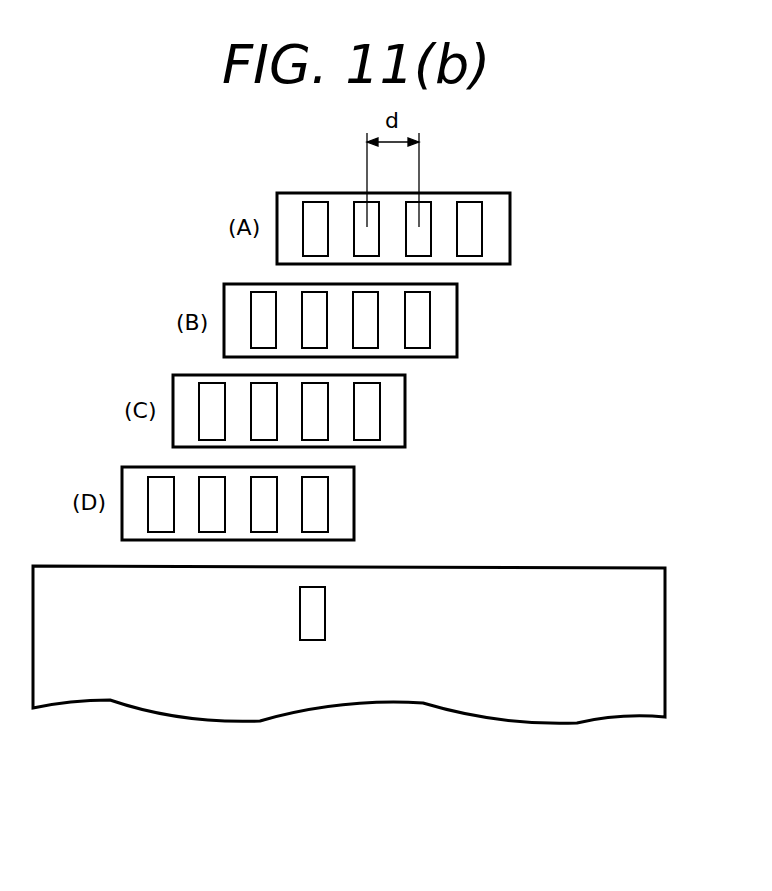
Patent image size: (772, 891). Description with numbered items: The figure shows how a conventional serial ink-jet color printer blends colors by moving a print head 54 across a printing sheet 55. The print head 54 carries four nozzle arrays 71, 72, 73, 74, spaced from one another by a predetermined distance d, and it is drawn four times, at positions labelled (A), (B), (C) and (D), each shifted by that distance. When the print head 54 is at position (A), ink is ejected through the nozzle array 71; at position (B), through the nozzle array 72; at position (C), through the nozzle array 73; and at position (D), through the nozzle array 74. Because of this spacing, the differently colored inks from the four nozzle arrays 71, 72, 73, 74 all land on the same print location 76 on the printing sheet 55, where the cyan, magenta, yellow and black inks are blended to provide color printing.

The print head 54 is at (510, 215).
The printing sheet 55 is at (587, 568).
The nozzle array 71 is at (316, 210).
The nozzle array 72 is at (313, 307).
The nozzle array 73 is at (317, 425).
The nozzle array 74 is at (315, 515).
The print location 76 is at (326, 612).